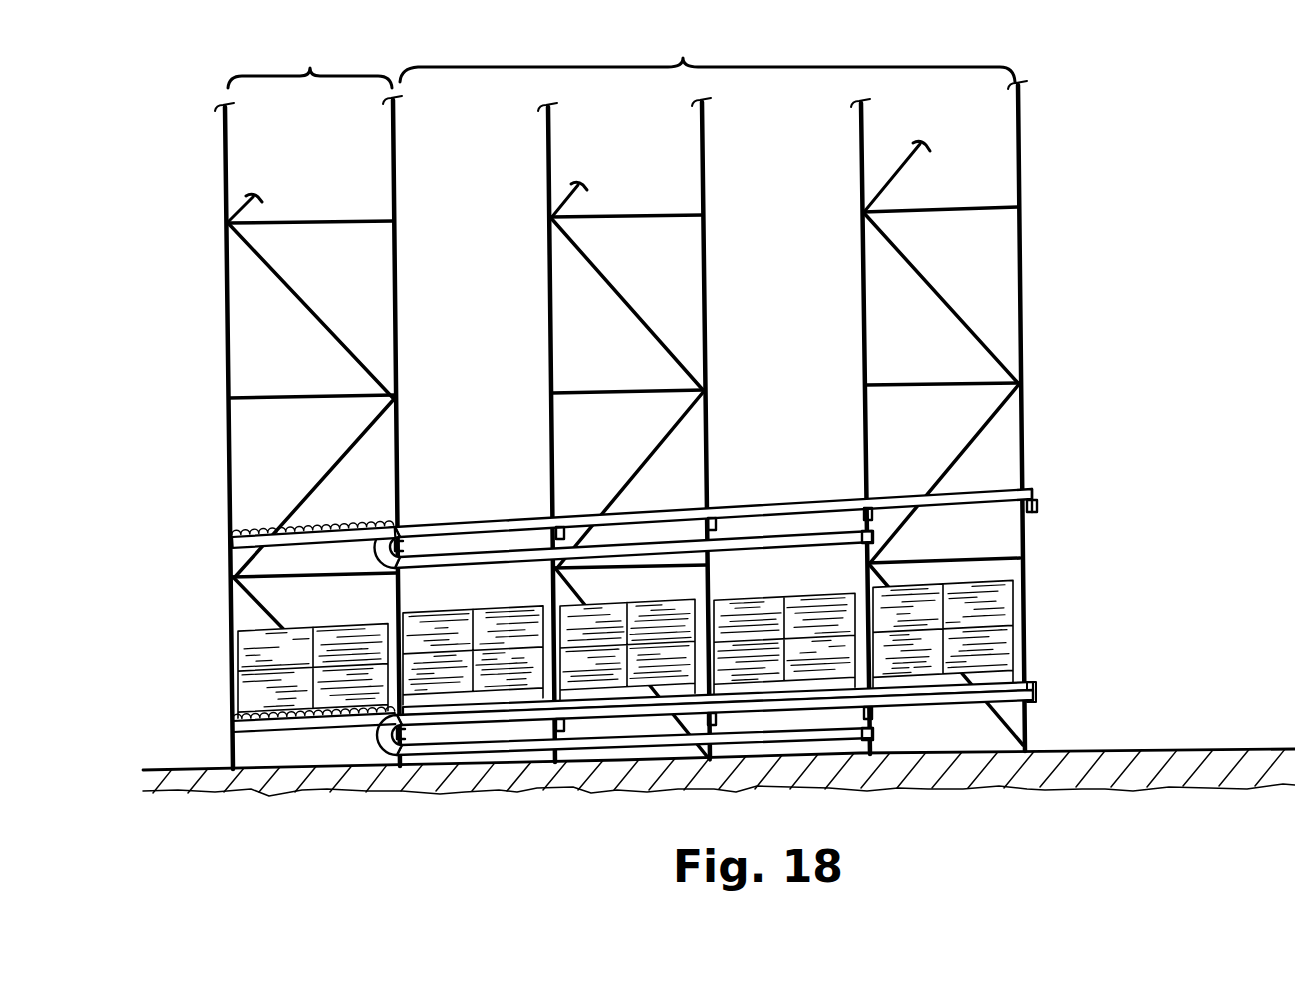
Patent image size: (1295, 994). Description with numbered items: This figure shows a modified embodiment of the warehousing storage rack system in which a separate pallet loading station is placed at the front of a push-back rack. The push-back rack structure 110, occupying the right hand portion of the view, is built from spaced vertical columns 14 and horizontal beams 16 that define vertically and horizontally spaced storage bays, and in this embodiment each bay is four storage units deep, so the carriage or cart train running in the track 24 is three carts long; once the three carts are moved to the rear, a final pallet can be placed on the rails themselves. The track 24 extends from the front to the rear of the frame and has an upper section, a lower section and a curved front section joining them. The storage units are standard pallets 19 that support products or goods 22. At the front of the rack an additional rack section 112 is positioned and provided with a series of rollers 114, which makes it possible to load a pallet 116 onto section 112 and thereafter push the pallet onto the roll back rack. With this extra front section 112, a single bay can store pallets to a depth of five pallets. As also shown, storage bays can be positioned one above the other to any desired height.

The vertical columns 14 is at (227, 176).
The horizontal beams 16 is at (308, 222).
The pallet 19 is at (985, 678).
The products or goods 22 is at (983, 605).
The track 24 is at (790, 505).
The push-back rack structure 110 is at (707, 50).
The additional rack section 112 is at (310, 59).
The rollers 114 is at (325, 527).
The pallet 116 is at (287, 698).